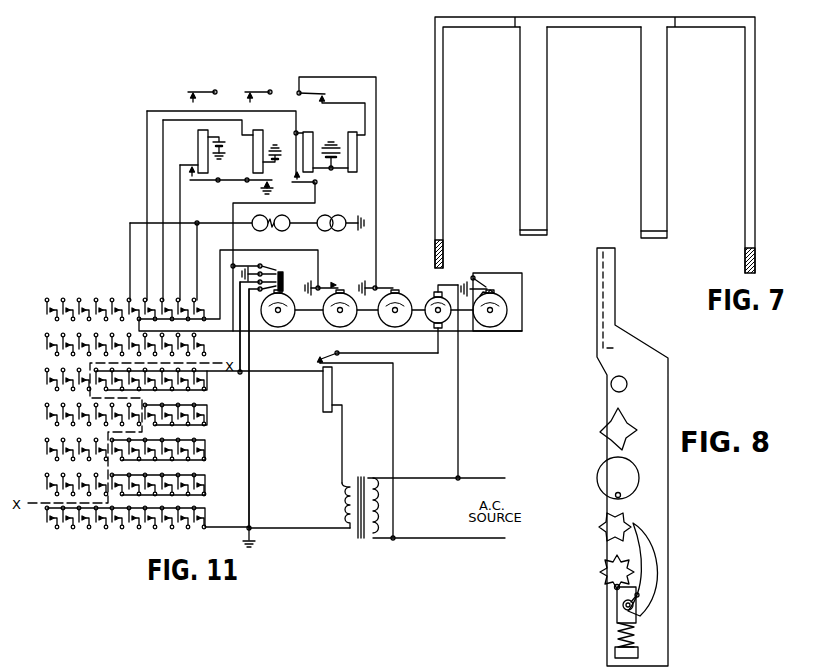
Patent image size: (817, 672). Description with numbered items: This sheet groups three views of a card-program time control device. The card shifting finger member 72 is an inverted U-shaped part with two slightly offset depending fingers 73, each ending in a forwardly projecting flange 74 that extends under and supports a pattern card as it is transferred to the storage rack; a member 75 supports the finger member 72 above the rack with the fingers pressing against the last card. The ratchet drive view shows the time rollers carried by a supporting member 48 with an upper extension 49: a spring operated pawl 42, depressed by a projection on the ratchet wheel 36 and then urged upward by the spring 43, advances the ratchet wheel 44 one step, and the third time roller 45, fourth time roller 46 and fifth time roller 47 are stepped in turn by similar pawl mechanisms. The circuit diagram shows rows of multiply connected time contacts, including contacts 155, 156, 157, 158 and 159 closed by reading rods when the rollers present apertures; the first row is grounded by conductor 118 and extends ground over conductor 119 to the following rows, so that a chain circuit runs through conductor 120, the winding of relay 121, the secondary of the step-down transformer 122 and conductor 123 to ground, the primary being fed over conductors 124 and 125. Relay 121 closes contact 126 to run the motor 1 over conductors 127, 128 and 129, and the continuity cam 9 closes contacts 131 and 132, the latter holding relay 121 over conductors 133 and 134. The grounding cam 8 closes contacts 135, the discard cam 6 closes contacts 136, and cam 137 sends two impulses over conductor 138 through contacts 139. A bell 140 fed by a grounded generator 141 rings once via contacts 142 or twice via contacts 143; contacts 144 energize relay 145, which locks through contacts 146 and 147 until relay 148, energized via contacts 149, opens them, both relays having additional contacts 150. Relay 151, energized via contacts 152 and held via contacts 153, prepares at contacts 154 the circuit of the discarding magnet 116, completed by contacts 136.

In FIG. 7, the finger member 72 is at (606, 22).
In FIG. 7, the depending fingers 73 is at (645, 135).
In FIG. 7, the forwardly projecting flange 74 is at (665, 233).
In FIG. 7, the supporting member 75 is at (753, 253).
In FIG. 8, the supporting members 48 is at (657, 518).
In FIG. 8, the extension 49 is at (608, 297).
In FIG. 8, the fifth time roller 47 is at (611, 384).
In FIG. 8, the fourth time roller 46 is at (607, 430).
In FIG. 8, the third time roller 45 is at (610, 478).
In FIG. 8, the ratchet wheel 44 is at (612, 528).
In FIG. 8, the ratchet wheel 36 is at (610, 580).
In FIG. 8, the spring operated pawl 42 is at (647, 582).
In FIG. 8, the spring 43 is at (633, 640).
In FIG. 11, the additional contacts 150 is at (191, 98).
In FIG. 11, the contacts 154 is at (327, 95).
In FIG. 11, the relay 145 is at (202, 142).
In FIG. 11, the relay 148 is at (255, 158).
In FIG. 11, the relay 151 is at (310, 138).
In FIG. 11, the discarding magnet 116 is at (353, 170).
In FIG. 11, the contacts 146 is at (187, 176).
In FIG. 11, the contacts 147 is at (262, 182).
In FIG. 11, the contacts 153 is at (288, 178).
In FIG. 11, the contacts 143 is at (135, 272).
In FIG. 11, the contacts 152 is at (151, 216).
In FIG. 11, the contacts 149 is at (168, 220).
In FIG. 11, the contacts 144 is at (184, 243).
In FIG. 11, the contacts 142 is at (200, 272).
In FIG. 11, the bell 140 is at (260, 232).
In FIG. 11, the grounded generator 141 is at (331, 232).
In FIG. 11, the contacts 131 is at (276, 268).
In FIG. 11, the contact 132 is at (283, 284).
In FIG. 11, the continuity cam 9 is at (293, 316).
In FIG. 11, the grounding cam 8 is at (351, 316).
In FIG. 11, the discard cam 6 is at (405, 318).
In FIG. 11, the motor 1 is at (446, 318).
In FIG. 11, the cam 137 is at (503, 308).
In FIG. 11, the conductor 138 is at (495, 335).
In FIG. 11, the contacts 135 is at (331, 287).
In FIG. 11, the contacts 136 is at (389, 288).
In FIG. 11, the contacts 139 is at (489, 288).
In FIG. 11, the conductor 133 is at (240, 342).
In FIG. 11, the conductor 134 is at (251, 428).
In FIG. 11, the conductor 120 is at (273, 373).
In FIG. 11, the relay 121 is at (332, 388).
In FIG. 11, the contact 126 is at (317, 356).
In FIG. 11, the conductor 127 is at (412, 353).
In FIG. 11, the conductor 128 is at (394, 467).
In FIG. 11, the conductor 129 is at (466, 430).
In FIG. 11, the step-down transformer 122 is at (358, 478).
In FIG. 11, the conductor 125 is at (472, 478).
In FIG. 11, the conductor 124 is at (458, 542).
In FIG. 11, the conductor 123 is at (300, 530).
In FIG. 11, the conductor 118 is at (232, 530).
In FIG. 11, the conductor 119 is at (147, 531).
In FIG. 11, the contacts 155 is at (207, 386).
In FIG. 11, the contacts 156 is at (207, 421).
In FIG. 11, the contacts 157 is at (205, 457).
In FIG. 11, the contacts 158 is at (205, 492).
In FIG. 11, the contacts 159 is at (133, 527).